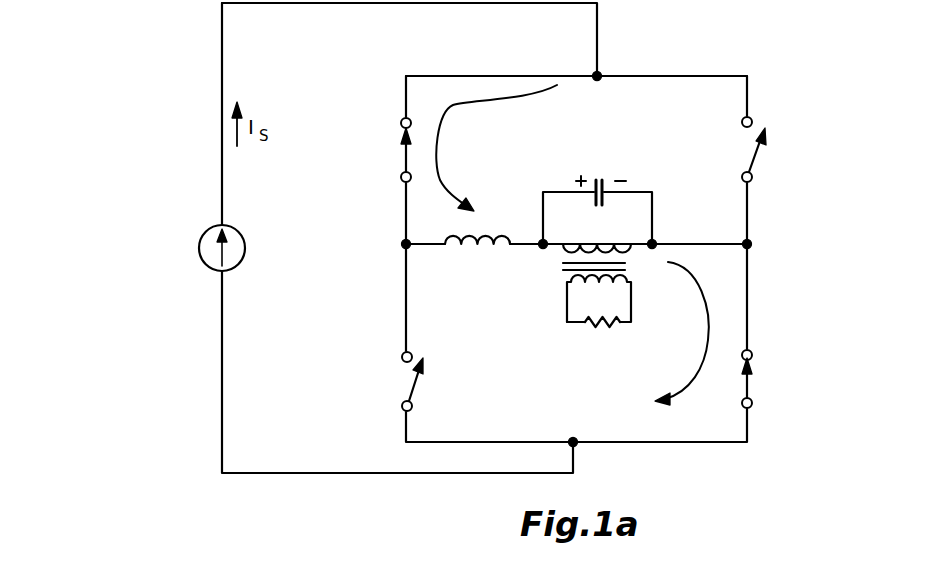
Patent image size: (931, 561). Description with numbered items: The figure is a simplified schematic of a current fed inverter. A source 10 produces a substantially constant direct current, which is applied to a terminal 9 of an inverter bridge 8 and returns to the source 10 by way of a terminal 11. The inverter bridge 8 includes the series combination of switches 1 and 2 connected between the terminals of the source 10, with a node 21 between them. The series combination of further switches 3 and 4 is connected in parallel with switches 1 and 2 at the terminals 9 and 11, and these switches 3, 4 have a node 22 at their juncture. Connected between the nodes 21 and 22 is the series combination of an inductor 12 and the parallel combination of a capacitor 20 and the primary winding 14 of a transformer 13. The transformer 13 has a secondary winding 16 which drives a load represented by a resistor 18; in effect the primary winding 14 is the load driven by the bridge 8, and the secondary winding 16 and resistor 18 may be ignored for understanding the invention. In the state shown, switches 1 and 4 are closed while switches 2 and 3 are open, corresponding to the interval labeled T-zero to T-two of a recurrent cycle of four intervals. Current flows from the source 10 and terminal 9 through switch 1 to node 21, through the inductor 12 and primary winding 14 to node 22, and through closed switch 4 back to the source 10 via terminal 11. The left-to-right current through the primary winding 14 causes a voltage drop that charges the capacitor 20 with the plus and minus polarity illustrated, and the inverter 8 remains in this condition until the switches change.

The switch 1 is at (404, 158).
The switch 2 is at (414, 383).
The switch 3 is at (757, 155).
The switch 4 is at (750, 385).
The inverter bridge 8 is at (607, 252).
The terminal 9 is at (594, 74).
The source 10 is at (245, 246).
The terminal 11 is at (576, 446).
The inductor 12 is at (481, 252).
The transformer 13 is at (596, 303).
The primary winding 14 is at (562, 248).
The secondary winding 16 is at (586, 283).
The resistor 18 is at (596, 330).
The capacitor 20 is at (598, 179).
The node 21 is at (404, 245).
The node 22 is at (752, 245).